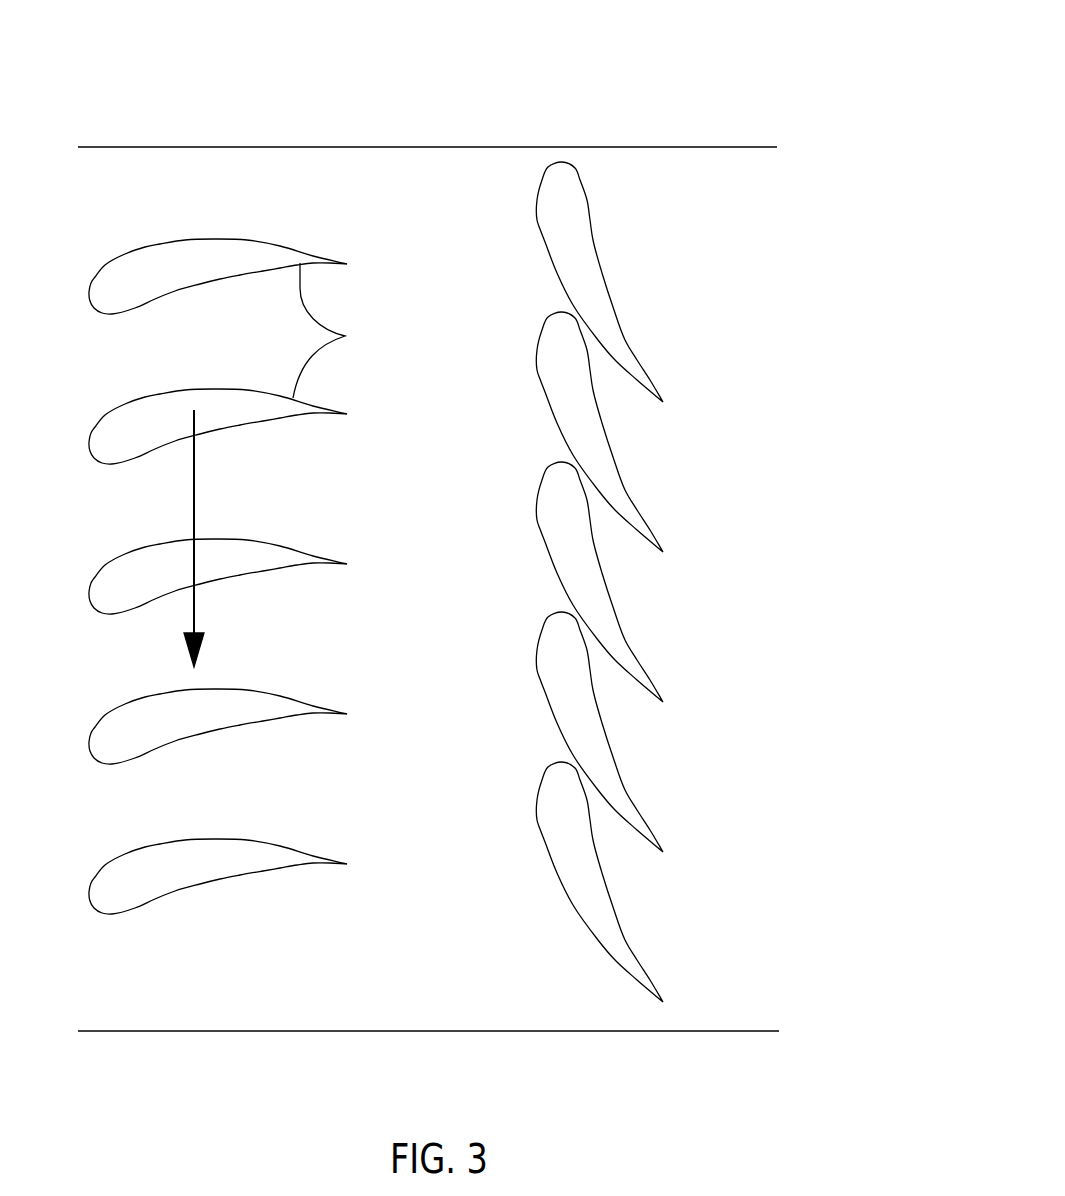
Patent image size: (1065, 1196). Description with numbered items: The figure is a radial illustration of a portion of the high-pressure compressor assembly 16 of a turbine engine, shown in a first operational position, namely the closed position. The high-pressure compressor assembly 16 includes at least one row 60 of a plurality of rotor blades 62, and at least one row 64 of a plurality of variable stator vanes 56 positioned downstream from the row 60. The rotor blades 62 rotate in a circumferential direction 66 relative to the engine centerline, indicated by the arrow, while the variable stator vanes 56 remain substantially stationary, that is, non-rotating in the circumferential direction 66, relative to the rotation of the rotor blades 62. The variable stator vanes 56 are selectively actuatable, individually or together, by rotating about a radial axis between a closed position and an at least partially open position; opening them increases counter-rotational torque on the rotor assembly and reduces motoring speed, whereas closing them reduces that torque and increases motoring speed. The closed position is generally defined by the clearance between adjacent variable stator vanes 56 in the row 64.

The high-pressure compressor assembly 16 is at (792, 67).
The variable stator vane 56 is at (640, 512).
The row of rotor blades 60 is at (260, 108).
The rotor blade 62 is at (345, 336).
The row of variable stator vanes 64 is at (650, 505).
The circumferential direction 66 is at (194, 498).